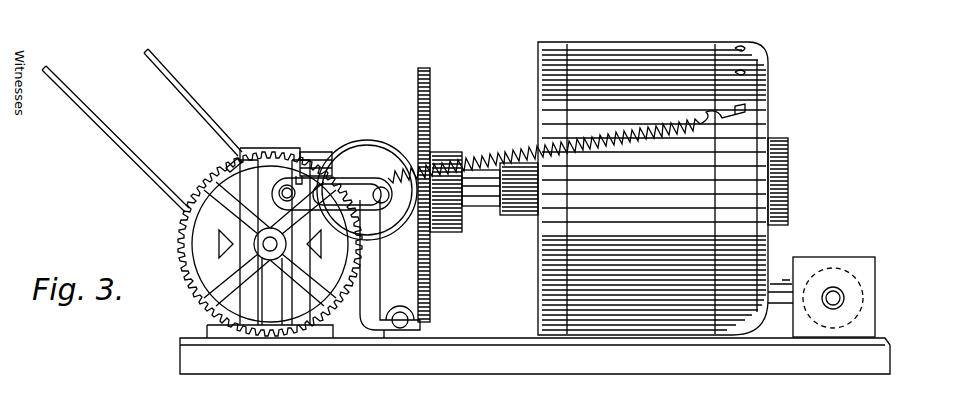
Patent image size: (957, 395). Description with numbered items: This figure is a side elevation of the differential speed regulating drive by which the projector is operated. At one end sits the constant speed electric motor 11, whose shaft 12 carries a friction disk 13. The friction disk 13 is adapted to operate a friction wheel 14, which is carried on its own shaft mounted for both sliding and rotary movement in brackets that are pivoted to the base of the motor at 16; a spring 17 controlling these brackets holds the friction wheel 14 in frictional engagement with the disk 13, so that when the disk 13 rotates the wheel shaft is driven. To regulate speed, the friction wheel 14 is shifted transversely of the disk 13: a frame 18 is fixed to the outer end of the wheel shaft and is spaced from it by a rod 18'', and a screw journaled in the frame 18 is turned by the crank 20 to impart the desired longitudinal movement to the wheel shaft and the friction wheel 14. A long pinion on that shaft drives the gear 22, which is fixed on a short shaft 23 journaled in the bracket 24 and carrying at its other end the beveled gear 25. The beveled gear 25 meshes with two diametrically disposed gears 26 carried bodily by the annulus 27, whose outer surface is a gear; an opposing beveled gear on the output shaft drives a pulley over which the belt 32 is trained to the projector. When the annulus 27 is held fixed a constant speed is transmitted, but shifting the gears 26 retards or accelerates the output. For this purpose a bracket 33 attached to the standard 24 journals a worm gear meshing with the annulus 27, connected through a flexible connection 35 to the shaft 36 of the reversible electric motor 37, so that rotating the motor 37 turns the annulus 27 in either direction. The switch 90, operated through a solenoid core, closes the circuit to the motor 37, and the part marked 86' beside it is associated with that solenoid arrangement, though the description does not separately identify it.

The electric motor 11 is at (758, 125).
The shaft 12 is at (478, 208).
The friction disk 13 is at (431, 264).
The friction wheel 14 is at (370, 150).
The pivot 16 is at (415, 322).
The spring 17 is at (603, 128).
The frame 18 is at (316, 143).
The rod 18'' is at (274, 155).
The crank 20 is at (374, 188).
The driven gear 22 is at (203, 185).
The short shaft 23 is at (267, 260).
The bracket 24 is at (257, 290).
The beveled gear 25 is at (222, 245).
The gears 26 is at (182, 224).
The annulus 27 is at (230, 168).
The belt 32 is at (182, 80).
The bracket 33 is at (297, 178).
The flexible connection 35 is at (322, 178).
The shaft 36 is at (494, 162).
The reversible electric motor 37 is at (766, 56).
The bearing box 86' is at (846, 297).
The switch 90 is at (778, 284).